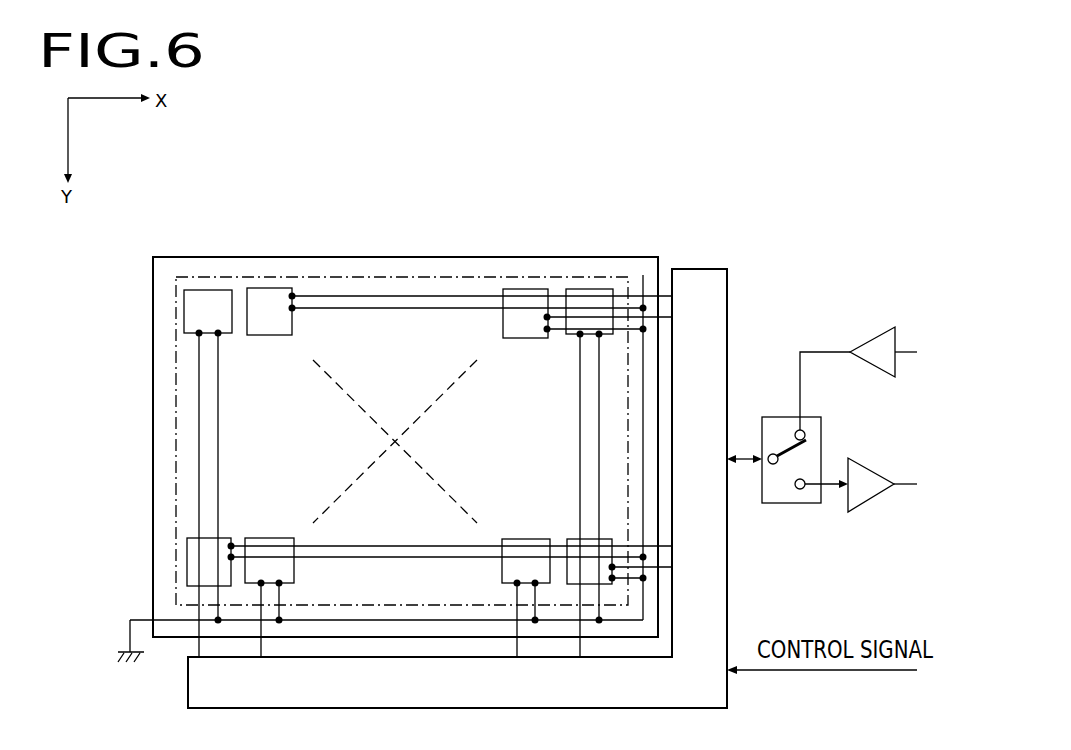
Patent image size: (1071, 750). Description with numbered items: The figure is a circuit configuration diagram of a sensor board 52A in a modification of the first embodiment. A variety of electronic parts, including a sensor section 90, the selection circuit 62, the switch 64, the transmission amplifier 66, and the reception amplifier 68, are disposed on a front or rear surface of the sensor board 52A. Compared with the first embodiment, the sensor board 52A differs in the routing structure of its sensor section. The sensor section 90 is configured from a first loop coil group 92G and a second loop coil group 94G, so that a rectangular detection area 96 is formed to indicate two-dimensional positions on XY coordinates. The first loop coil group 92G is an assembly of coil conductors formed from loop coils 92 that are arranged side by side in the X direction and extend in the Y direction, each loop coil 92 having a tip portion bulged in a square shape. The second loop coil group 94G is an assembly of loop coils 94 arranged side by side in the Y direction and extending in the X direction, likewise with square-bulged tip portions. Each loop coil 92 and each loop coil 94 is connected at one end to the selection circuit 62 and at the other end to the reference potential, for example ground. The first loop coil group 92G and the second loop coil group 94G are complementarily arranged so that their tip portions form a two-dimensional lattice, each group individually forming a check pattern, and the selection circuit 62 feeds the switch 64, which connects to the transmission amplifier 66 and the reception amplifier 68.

The sensor board 52A is at (298, 188).
The sensor section 90 is at (174, 254).
The detection area 96 is at (390, 277).
The loop coil 92 is at (214, 289).
The loop coil 94 is at (266, 335).
The first loop coil group 92G is at (486, 195).
The second loop coil group 94G is at (451, 369).
The selection circuit 62 is at (701, 268).
The switch 64 is at (782, 505).
The transmission amplifier 66 is at (877, 345).
The reception amplifier 68 is at (868, 480).